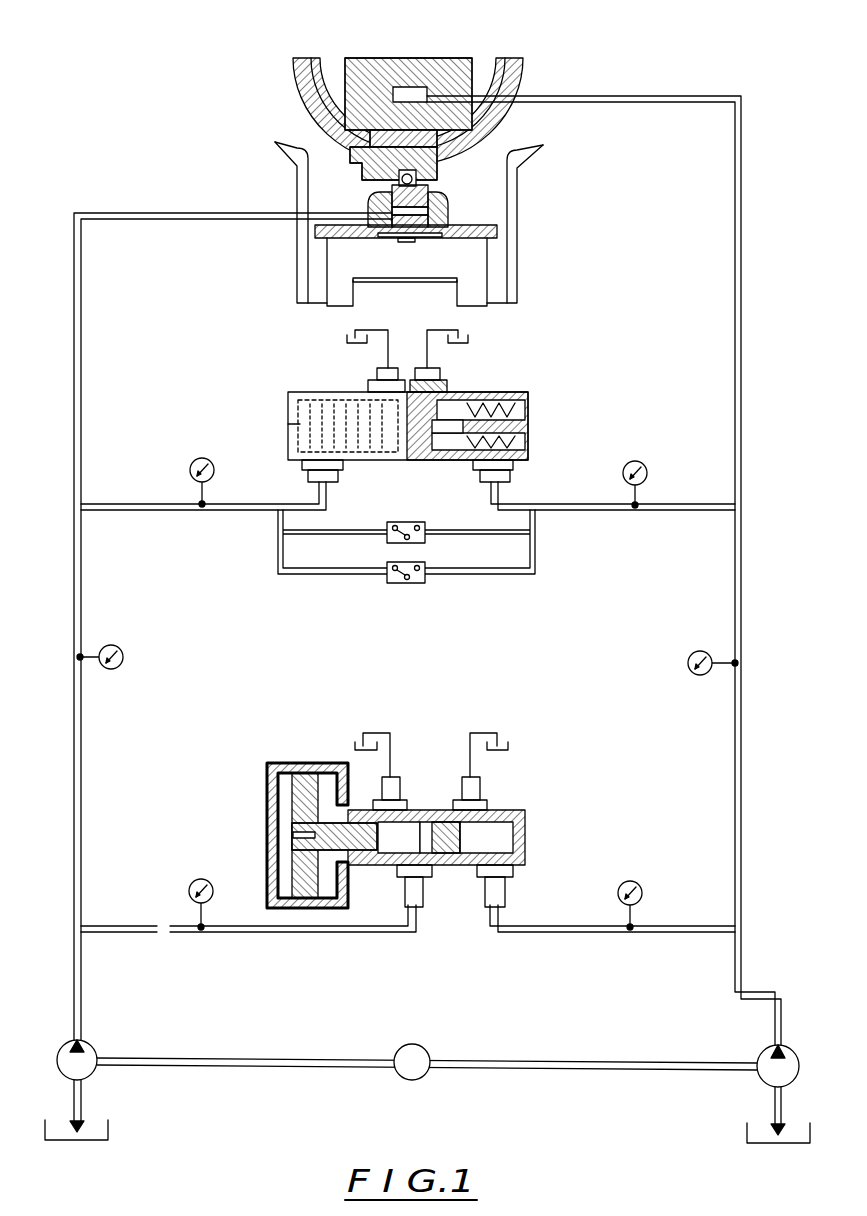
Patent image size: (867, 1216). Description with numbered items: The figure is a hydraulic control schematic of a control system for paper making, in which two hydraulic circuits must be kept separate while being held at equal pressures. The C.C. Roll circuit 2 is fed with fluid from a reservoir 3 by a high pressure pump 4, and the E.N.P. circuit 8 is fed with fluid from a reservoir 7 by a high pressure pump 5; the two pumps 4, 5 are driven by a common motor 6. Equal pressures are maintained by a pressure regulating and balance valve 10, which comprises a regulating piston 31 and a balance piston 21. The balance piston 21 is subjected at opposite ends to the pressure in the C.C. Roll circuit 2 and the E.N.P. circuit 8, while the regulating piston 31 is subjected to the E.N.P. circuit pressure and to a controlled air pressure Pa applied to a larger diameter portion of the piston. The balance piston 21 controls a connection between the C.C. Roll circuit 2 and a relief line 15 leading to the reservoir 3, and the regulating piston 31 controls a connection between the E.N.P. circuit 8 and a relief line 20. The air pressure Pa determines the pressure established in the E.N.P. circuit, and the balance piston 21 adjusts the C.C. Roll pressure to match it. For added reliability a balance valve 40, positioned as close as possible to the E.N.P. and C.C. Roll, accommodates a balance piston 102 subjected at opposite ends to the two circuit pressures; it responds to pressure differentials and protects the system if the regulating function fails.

The C.C. Roll circuit 2 is at (733, 837).
The reservoir 3 is at (755, 1130).
The high pressure pump 4 is at (772, 1069).
The high pressure pump 5 is at (69, 1051).
The common motor 6 is at (395, 1053).
The reservoir 7 is at (93, 1128).
The E.N.P. circuit 8 is at (78, 810).
The pressure regulating and balance valve 10 is at (443, 802).
The relief line 15 is at (478, 740).
The relief line 20 is at (378, 741).
The balance piston 21 is at (458, 838).
The regulating piston 31 is at (379, 832).
The balance valve 40 is at (389, 416).
The balance piston 102 is at (407, 437).
The controlled air pressure Pa is at (266, 868).